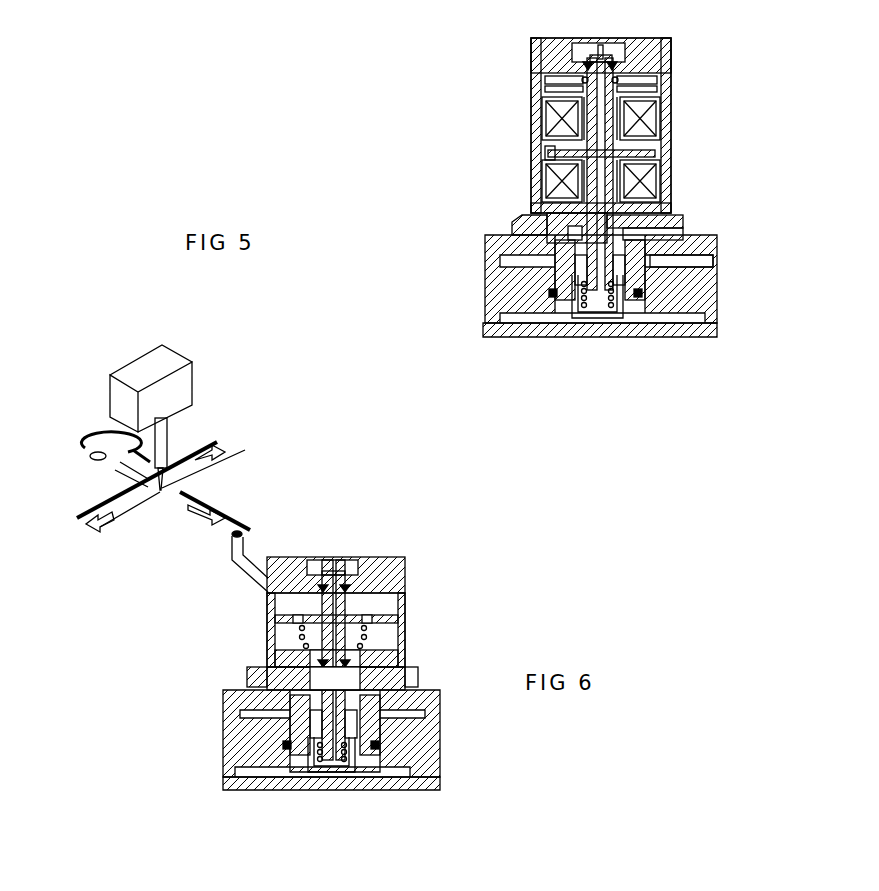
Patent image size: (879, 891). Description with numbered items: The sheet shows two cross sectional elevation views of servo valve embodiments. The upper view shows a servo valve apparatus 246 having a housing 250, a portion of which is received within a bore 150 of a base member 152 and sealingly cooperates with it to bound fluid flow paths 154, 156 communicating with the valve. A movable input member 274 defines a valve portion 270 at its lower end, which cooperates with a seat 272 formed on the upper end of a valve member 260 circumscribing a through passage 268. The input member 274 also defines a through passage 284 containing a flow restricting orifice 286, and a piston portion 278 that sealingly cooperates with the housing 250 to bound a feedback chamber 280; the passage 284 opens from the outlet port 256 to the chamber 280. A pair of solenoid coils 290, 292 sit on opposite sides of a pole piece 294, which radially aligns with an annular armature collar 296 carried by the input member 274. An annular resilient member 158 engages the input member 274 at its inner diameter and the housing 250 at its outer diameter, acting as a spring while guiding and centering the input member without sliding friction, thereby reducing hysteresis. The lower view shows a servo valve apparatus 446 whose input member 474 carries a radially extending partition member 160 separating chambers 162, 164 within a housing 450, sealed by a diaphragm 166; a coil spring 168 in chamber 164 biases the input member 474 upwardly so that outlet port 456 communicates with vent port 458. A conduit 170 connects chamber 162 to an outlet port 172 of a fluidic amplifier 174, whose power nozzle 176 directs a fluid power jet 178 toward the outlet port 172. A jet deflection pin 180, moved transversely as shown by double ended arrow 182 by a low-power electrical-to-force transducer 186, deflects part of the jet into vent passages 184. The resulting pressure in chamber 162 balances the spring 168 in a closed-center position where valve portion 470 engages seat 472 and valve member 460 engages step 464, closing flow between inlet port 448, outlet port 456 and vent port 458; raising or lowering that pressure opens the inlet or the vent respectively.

In FIG. 5, the feedback chamber 280 is at (580, 55).
In FIG. 5, the flow restricting orifice 286 is at (598, 43).
In FIG. 5, the movable input member 274 is at (604, 50).
In FIG. 5, the piston portion 278 is at (615, 64).
In FIG. 5, the annular resilient member 158 is at (560, 78).
In FIG. 5, the through passage 284 is at (610, 115).
In FIG. 5, the solenoid coil 290 is at (555, 128).
In FIG. 5, the pole piece 294 is at (655, 153).
In FIG. 5, the annular armature collar 296 is at (550, 153).
In FIG. 5, the solenoid coil 292 is at (555, 182).
In FIG. 5, the housing 250 is at (548, 220).
In FIG. 5, the seat 272 is at (520, 232).
In FIG. 5, the valve portion 270 is at (680, 222).
In FIG. 5, the valve member 260 is at (655, 242).
In FIG. 5, the base member 152 is at (700, 290).
In FIG. 5, the fluid flow path 154 is at (713, 262).
In FIG. 5, the through passage 268 is at (560, 252).
In FIG. 5, the bore 150 is at (575, 295).
In FIG. 5, the outlet port 256 is at (612, 312).
In FIG. 5, the fluid flow path 156 is at (705, 333).
In FIG. 5, the servo valve apparatus 246 is at (720, 130).
In FIG. 6, the low-power electrical-to-force transducer 186 is at (183, 380).
In FIG. 6, the double ended arrow 182 is at (180, 420).
In FIG. 6, the jet deflection pin 180 is at (182, 455).
In FIG. 6, the fluidic amplifier 174 is at (268, 410).
In FIG. 6, the fluid power jet 178 is at (125, 452).
In FIG. 6, the power nozzle 176 is at (120, 473).
In FIG. 6, the vent passages 184 is at (248, 455).
In FIG. 6, the outlet port 172 is at (248, 528).
In FIG. 6, the conduit 170 is at (242, 552).
In FIG. 6, the partition member 160 is at (398, 592).
In FIG. 6, the chamber 162 is at (290, 600).
In FIG. 6, the chamber 164 is at (290, 635).
In FIG. 6, the diaphragm 166 is at (385, 622).
In FIG. 6, the coil spring 168 is at (300, 656).
In FIG. 6, the input member 474 is at (355, 665).
In FIG. 6, the housing 450 is at (265, 688).
In FIG. 6, the vent port 458 is at (410, 682).
In FIG. 6, the inlet port 448 is at (430, 728).
In FIG. 6, the valve portion 470 is at (262, 712).
In FIG. 6, the seat 472 is at (312, 736).
In FIG. 6, the valve member 460 is at (287, 745).
In FIG. 6, the step 464 is at (312, 758).
In FIG. 6, the outlet port 456 is at (335, 780).
In FIG. 6, the servo valve apparatus 446 is at (458, 572).